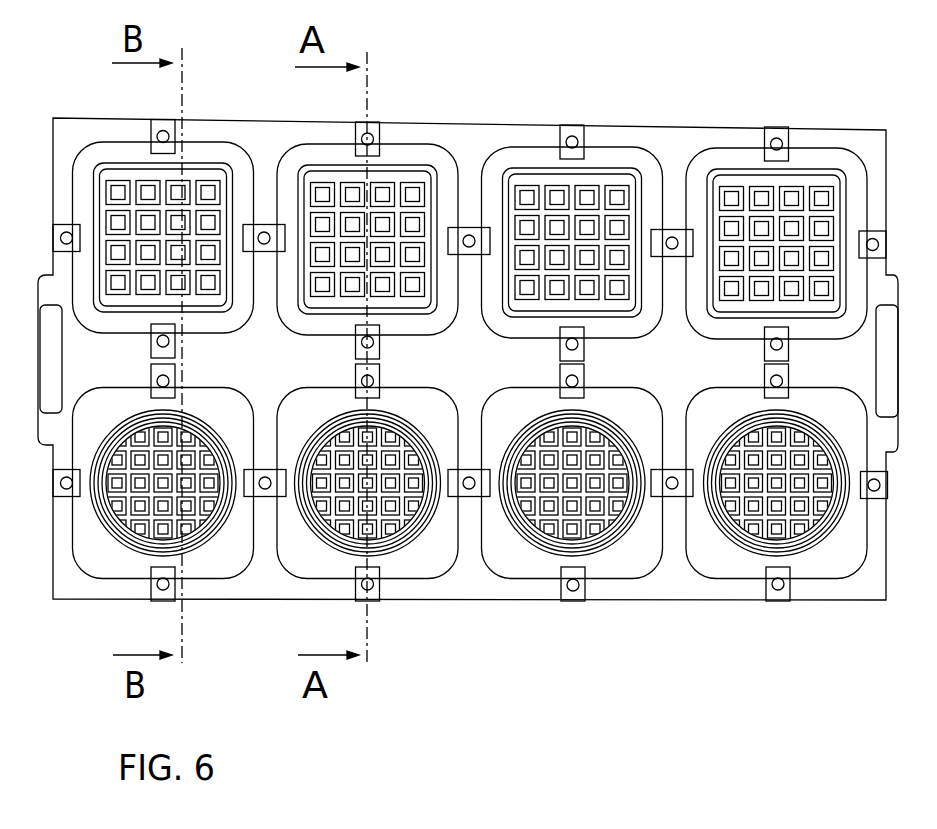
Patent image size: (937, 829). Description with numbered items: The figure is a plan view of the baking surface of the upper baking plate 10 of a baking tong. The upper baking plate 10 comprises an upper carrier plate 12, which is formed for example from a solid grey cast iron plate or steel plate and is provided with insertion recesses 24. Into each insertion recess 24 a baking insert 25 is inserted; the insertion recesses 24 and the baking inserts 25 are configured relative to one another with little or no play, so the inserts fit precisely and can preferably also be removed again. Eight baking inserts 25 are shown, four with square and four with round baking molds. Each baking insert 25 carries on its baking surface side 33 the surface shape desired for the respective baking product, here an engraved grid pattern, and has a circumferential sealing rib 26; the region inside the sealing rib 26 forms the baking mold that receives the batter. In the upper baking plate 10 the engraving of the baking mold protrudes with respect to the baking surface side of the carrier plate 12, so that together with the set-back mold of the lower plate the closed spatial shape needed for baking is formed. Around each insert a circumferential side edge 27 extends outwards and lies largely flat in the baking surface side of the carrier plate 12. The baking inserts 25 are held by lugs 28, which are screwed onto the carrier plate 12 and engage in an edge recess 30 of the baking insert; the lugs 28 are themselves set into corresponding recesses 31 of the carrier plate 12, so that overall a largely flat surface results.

The upper baking plate 10 is at (612, 112).
The upper carrier plate 12 is at (700, 375).
The insertion recess 24 is at (858, 158).
The baking insert 25 is at (495, 139).
The sealing rib 26 is at (815, 175).
The side edge 27 is at (90, 153).
The lug 28 is at (573, 592).
The edge recess 30 is at (557, 572).
The recess of the carrier plate 31 is at (585, 588).
The baking surface side 33 is at (662, 140).